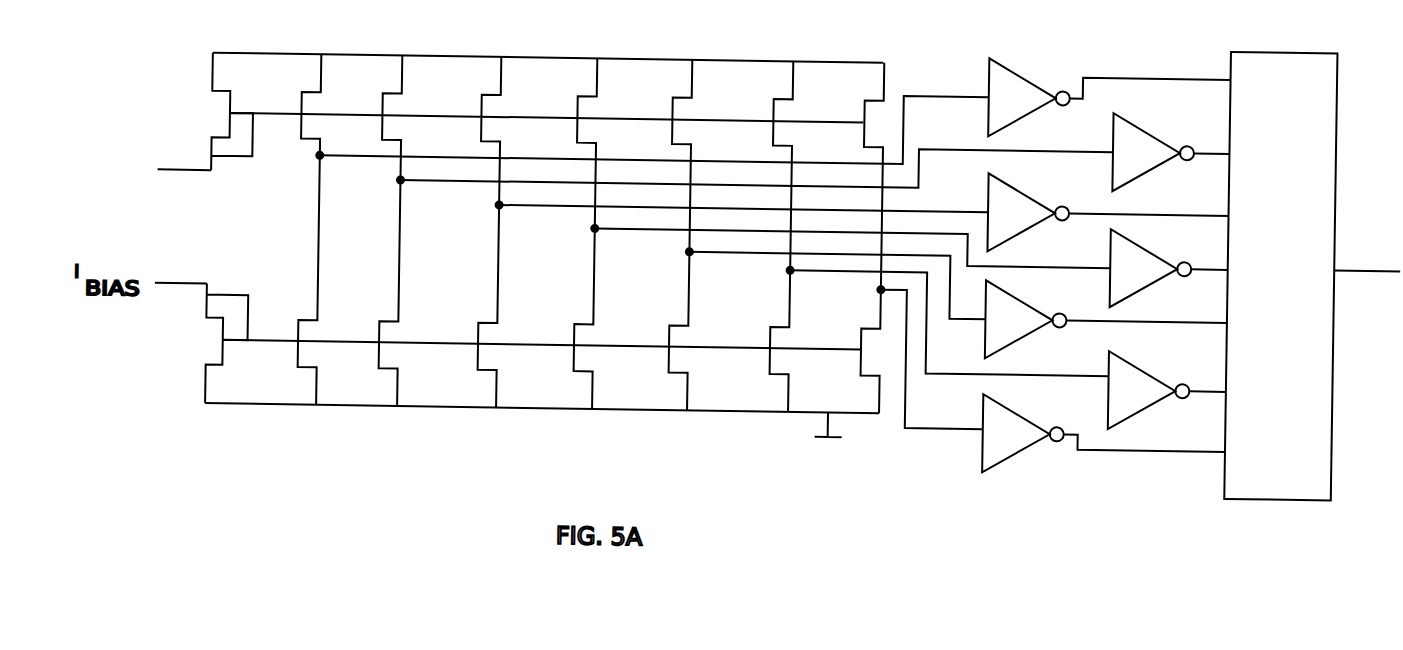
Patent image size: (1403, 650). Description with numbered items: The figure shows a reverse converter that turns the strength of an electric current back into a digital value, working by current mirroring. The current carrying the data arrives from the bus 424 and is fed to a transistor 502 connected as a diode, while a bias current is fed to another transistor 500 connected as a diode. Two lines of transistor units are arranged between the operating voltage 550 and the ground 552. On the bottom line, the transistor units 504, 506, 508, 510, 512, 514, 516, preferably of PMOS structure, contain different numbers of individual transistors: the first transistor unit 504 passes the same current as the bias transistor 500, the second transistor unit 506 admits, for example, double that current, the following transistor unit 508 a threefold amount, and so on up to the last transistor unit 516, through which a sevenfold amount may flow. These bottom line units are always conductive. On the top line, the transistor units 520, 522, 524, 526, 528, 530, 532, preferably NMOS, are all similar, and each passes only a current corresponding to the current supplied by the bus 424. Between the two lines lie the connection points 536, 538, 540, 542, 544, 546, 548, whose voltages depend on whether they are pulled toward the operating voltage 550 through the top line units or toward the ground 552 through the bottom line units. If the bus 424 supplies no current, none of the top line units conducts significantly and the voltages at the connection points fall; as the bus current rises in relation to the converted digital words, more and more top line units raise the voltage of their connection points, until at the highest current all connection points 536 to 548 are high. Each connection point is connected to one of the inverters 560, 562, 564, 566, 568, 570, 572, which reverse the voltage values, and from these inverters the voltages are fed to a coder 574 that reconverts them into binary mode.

The bus 424 is at (173, 180).
The transistor connected as a diode 500 is at (224, 339).
The transistor connected as a diode 502 is at (228, 132).
The transistor unit 504 is at (297, 353).
The second transistor unit 506 is at (378, 353).
The transistor unit 508 is at (477, 353).
The transistor unit 510 is at (573, 353).
The transistor unit 512 is at (668, 353).
The transistor unit 514 is at (769, 353).
The last transistor unit 516 is at (860, 353).
The transistor unit 520 is at (297, 115).
The transistor unit 522 is at (378, 118).
The transistor unit 524 is at (477, 118).
The transistor unit 526 is at (573, 118).
The transistor unit 528 is at (668, 118).
The transistor unit 530 is at (769, 119).
The transistor unit 532 is at (860, 119).
The connection point 536 is at (313, 161).
The connection point 538 is at (397, 186).
The connection point 540 is at (495, 209).
The connection point 542 is at (591, 231).
The connection point 544 is at (686, 253).
The connection point 546 is at (788, 270).
The connection point 548 is at (878, 288).
The operating voltage 550 is at (264, 59).
The ground 552 is at (347, 412).
The inverter 560 is at (1012, 62).
The inverter 562 is at (1024, 190).
The inverter 564 is at (1030, 298).
The inverter 566 is at (1032, 413).
The inverter 568 is at (1143, 120).
The inverter 570 is at (1155, 248).
The inverter 572 is at (1151, 368).
The coder 574 is at (1262, 42).